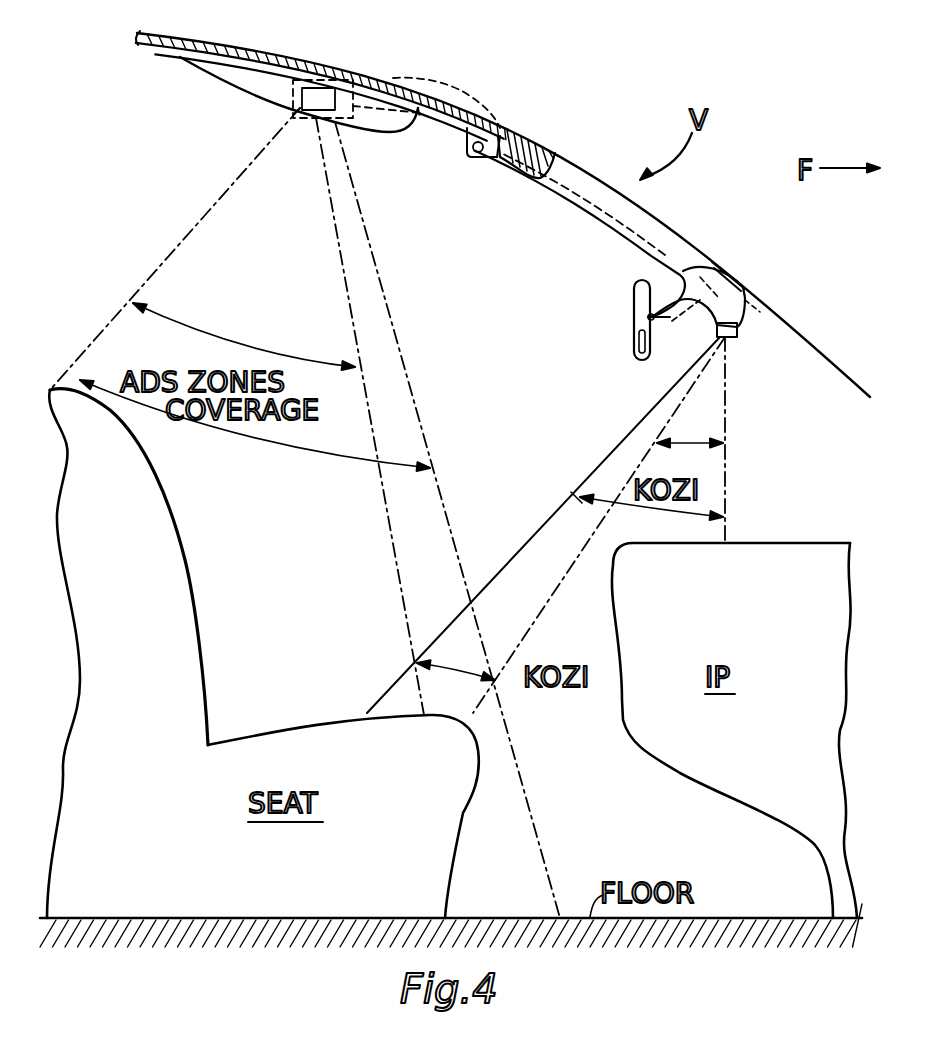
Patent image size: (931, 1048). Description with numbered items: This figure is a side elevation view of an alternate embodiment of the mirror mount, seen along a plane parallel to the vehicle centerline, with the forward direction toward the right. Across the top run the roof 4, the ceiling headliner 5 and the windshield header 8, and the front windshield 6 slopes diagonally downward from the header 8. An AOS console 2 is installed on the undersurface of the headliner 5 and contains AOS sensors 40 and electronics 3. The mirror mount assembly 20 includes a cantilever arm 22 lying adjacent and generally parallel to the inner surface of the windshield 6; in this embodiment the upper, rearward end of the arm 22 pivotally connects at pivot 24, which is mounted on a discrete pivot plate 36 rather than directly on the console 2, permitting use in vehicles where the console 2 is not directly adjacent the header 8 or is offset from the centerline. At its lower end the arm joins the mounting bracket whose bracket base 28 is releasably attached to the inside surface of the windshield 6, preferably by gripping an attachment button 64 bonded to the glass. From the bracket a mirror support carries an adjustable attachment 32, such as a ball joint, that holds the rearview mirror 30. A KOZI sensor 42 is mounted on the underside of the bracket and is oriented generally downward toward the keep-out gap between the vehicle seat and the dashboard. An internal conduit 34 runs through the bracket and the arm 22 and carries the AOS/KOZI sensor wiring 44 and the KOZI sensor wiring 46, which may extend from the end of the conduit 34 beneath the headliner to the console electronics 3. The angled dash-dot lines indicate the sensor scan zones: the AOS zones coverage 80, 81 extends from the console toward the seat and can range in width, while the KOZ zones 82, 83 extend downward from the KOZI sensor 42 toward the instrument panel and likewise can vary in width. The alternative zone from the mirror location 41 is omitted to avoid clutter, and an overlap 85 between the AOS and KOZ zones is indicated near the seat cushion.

The AOS console 2 is at (227, 87).
The AOS console electronics 3 is at (293, 115).
The roof 4 is at (187, 43).
The ceiling headliner 5 is at (168, 50).
The front windshield 6 is at (596, 178).
The windshield header 8 is at (534, 140).
The mirror mount assembly 20 is at (575, 350).
The cantilever arm 22 is at (567, 205).
The pivot 24 is at (472, 150).
The bracket base 28 is at (713, 270).
The rearview mirror 30 is at (635, 288).
The adjustable attachment 32 is at (636, 316).
The internal conduit 34 is at (512, 168).
The pivot plate 36 is at (465, 141).
The AOS sensors 40 is at (330, 83).
The AOS sensor at mirror location 41 is at (638, 343).
The KOZI sensor 42 is at (732, 340).
The AOS/KOZI sensor wiring 44 is at (546, 208).
The KOZI sensor wiring 46 is at (753, 305).
The attachment button 64 is at (733, 276).
The AOS field 80 is at (288, 351).
The AOS zone coverage 81 is at (287, 455).
The KOZ field 82 is at (676, 443).
The KOZ zone 83 is at (588, 508).
The overlap 85 is at (471, 669).